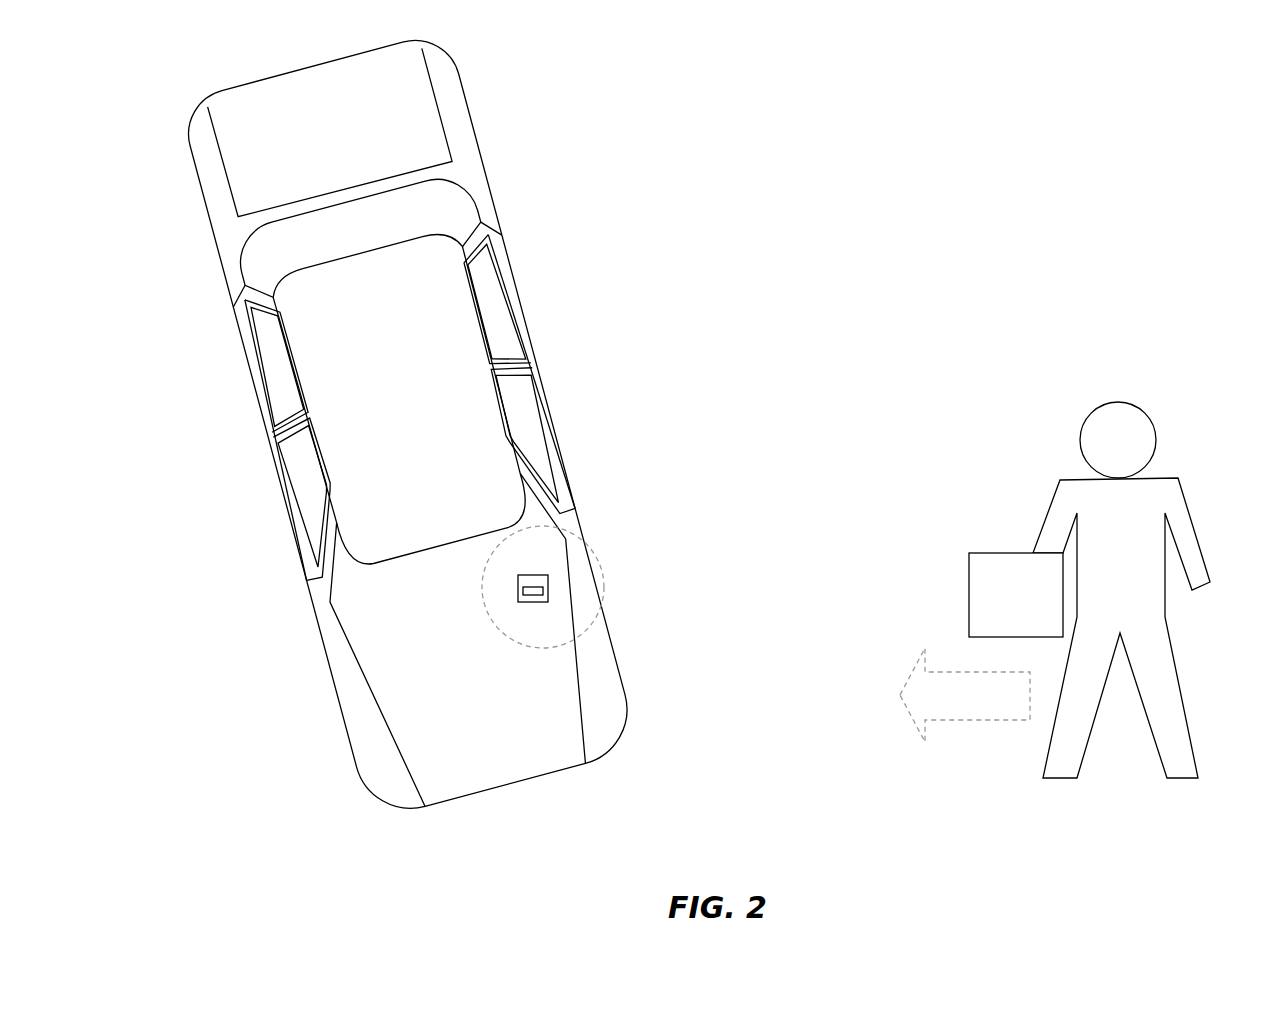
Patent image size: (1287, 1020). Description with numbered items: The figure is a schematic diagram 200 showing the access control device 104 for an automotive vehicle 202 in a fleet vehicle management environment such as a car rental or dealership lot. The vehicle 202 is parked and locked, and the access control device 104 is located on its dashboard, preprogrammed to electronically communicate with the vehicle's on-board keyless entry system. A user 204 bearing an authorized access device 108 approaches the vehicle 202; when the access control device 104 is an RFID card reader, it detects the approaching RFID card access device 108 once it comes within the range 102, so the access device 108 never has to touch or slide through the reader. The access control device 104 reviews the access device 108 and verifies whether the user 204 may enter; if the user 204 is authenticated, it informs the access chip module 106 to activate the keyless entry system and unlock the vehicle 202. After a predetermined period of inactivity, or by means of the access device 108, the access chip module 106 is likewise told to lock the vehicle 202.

The schematic diagram 200 is at (816, 172).
The automotive vehicle 202 is at (221, 94).
The range 102 is at (520, 642).
The access control device 104 is at (548, 576).
The access chip module 106 is at (549, 586).
The access device 108 is at (983, 553).
The user 204 is at (1180, 477).